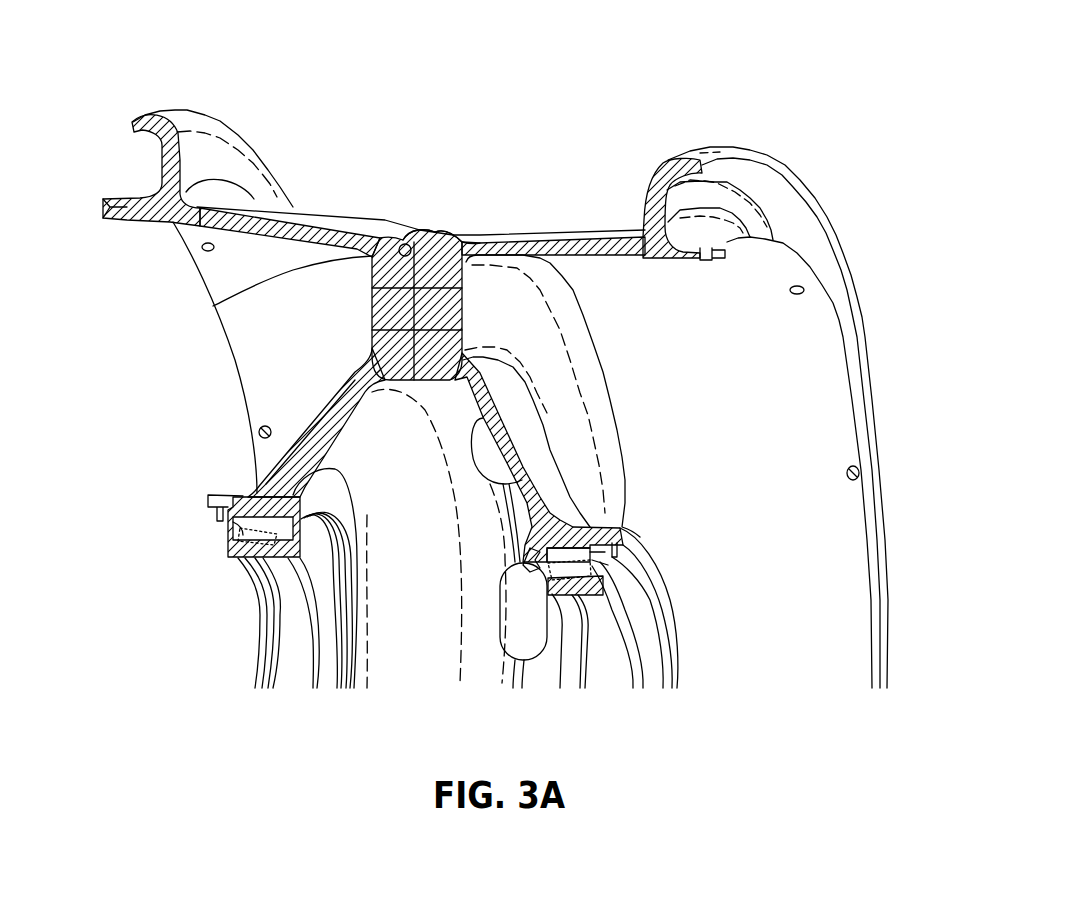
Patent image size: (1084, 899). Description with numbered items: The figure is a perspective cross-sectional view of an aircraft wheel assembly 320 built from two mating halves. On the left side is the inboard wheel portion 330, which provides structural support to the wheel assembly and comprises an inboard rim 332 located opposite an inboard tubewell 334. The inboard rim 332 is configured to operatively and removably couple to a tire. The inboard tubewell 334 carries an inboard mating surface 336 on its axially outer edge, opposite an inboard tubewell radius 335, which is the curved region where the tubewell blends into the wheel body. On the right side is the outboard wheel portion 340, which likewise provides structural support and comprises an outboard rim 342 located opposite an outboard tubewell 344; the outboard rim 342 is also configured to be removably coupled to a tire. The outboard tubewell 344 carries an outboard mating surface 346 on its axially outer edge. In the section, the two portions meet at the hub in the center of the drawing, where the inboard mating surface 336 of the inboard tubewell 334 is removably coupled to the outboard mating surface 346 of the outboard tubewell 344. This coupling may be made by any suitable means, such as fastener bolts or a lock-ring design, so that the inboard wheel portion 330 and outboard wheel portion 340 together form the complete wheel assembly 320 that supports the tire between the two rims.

The wheel hub assembly 320 is at (329, 104).
The inboard wheel portion 330 is at (318, 212).
The inboard rim 332 is at (153, 181).
The inboard tubewell 334 is at (381, 238).
The inboard tubewell radius 335 is at (215, 306).
The inboard mating surface 336 is at (418, 232).
The outboard wheel portion 340 is at (570, 233).
The outboard rim 342 is at (720, 173).
The outboard tubewell 344 is at (473, 236).
The outboard mating surface 346 is at (457, 230).